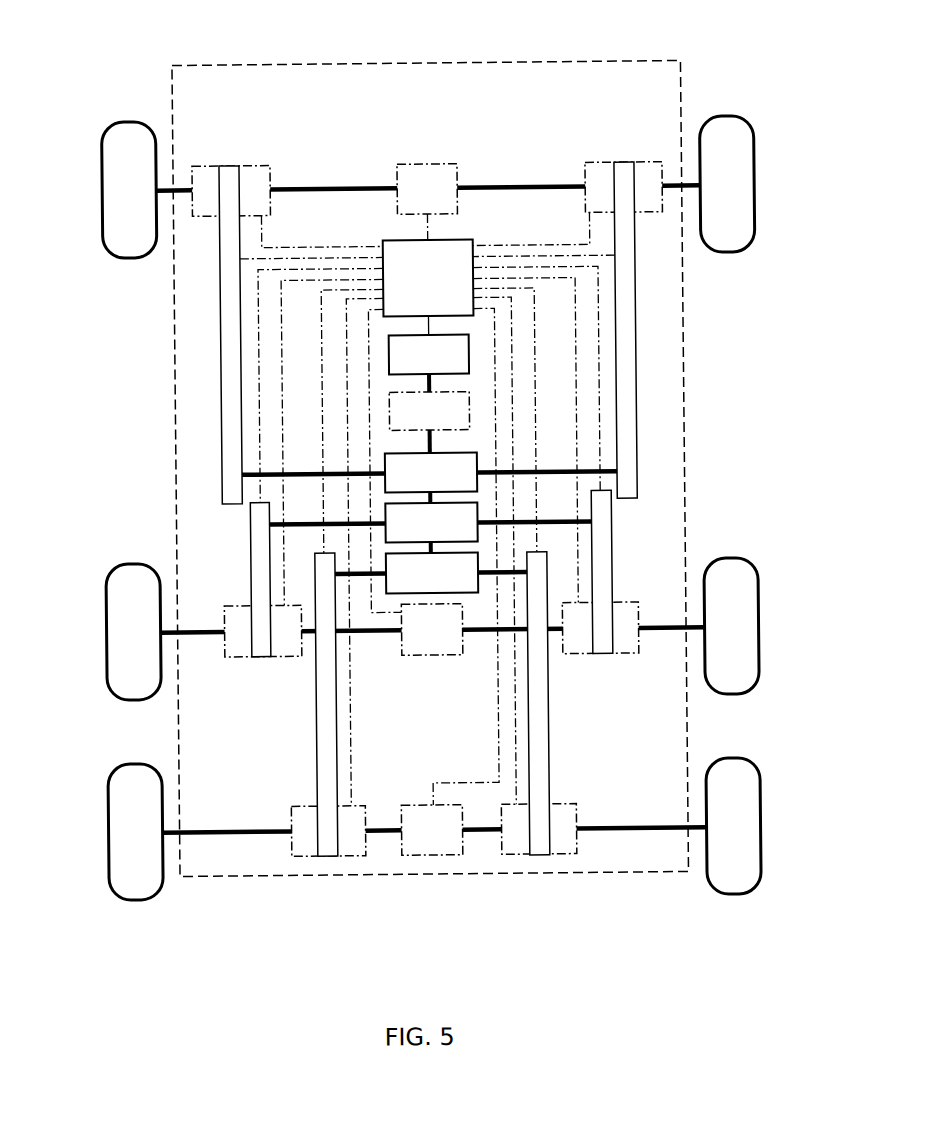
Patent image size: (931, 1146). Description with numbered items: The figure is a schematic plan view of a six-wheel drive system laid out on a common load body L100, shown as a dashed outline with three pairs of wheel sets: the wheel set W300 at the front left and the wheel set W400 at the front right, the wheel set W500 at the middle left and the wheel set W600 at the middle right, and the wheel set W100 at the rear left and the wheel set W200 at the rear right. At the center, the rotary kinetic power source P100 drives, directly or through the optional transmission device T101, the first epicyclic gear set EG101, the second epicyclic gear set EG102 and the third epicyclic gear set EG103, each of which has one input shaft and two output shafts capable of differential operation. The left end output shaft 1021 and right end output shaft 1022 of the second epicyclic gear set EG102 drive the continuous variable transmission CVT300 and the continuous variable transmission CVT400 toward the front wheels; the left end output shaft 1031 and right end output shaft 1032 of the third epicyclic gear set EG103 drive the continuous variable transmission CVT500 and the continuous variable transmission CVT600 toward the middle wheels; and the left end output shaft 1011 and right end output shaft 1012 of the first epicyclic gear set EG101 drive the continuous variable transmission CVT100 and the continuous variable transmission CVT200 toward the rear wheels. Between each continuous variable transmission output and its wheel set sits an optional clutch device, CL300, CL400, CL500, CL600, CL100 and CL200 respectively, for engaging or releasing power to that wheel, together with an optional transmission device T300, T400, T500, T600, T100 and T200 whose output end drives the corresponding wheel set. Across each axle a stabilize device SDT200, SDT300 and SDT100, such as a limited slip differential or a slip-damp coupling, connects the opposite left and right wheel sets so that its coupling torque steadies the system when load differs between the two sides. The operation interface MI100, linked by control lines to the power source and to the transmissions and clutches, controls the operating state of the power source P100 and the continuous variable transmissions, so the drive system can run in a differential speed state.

The common load body L100 is at (366, 62).
The wheel set W100 is at (123, 840).
The wheel set W200 is at (738, 840).
The wheel set W300 is at (119, 205).
The wheel set W400 is at (743, 206).
The wheel set W500 is at (125, 644).
The wheel set W600 is at (738, 648).
The transmission device T100 is at (288, 841).
The transmission device T200 is at (576, 844).
The transmission device T300 is at (211, 170).
The transmission device T400 is at (646, 167).
The transmission device T500 is at (238, 638).
The transmission device T600 is at (623, 644).
The clutch device CL100 is at (348, 841).
The clutch device CL200 is at (509, 843).
The clutch device CL300 is at (260, 176).
The clutch device CL400 is at (601, 169).
The clutch device CL500 is at (285, 643).
The clutch device CL600 is at (578, 644).
The continuous variable transmission CVT100 is at (307, 788).
The continuous variable transmission CVT200 is at (594, 764).
The continuous variable transmission CVT300 is at (234, 351).
The continuous variable transmission CVT400 is at (627, 339).
The continuous variable transmission CVT500 is at (262, 586).
The continuous variable transmission CVT600 is at (596, 590).
The stabilize device SDT100 is at (429, 843).
The stabilize device SDT200 is at (433, 190).
The stabilize device SDT300 is at (425, 647).
The operation interface MI100 is at (428, 288).
The rotary kinetic power source P100 is at (429, 364).
The transmission device T101 is at (429, 423).
The first epicyclic gear set EG101 is at (432, 573).
The second epicyclic gear set EG102 is at (431, 478).
The third epicyclic gear set EG103 is at (431, 528).
The left end output shaft 1011 is at (358, 572).
The right end output shaft 1012 is at (486, 636).
The left end output shaft 1021 is at (307, 468).
The right end output shaft 1022 is at (553, 470).
The left end output shaft 1031 is at (303, 518).
The right end output shaft 1032 is at (557, 519).